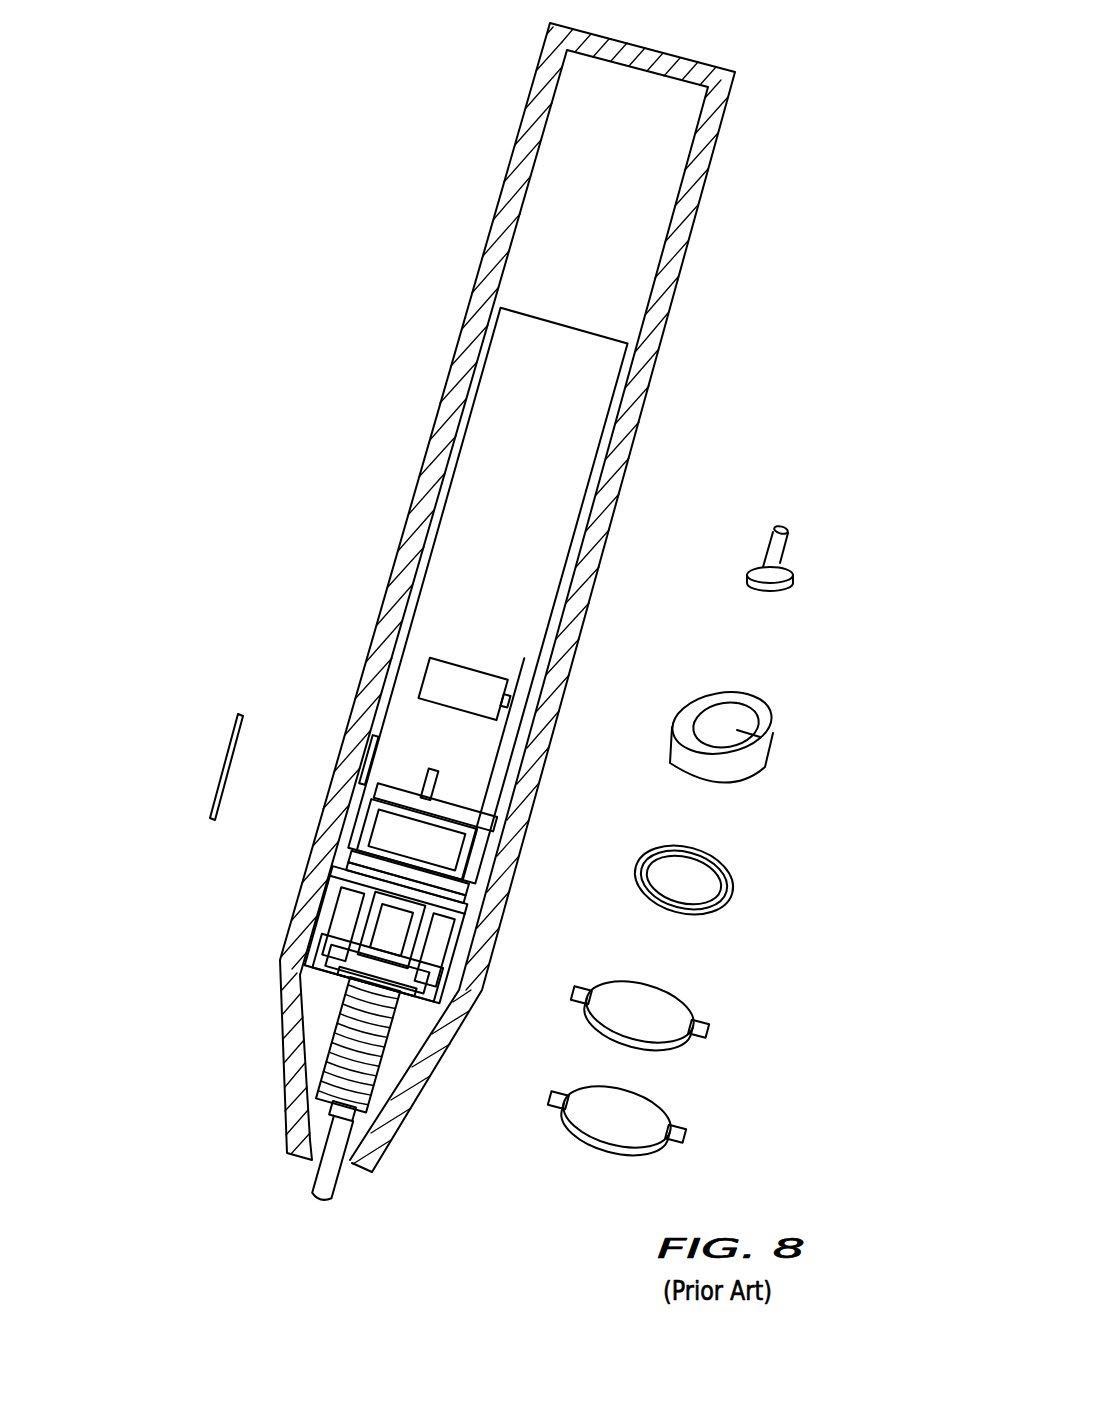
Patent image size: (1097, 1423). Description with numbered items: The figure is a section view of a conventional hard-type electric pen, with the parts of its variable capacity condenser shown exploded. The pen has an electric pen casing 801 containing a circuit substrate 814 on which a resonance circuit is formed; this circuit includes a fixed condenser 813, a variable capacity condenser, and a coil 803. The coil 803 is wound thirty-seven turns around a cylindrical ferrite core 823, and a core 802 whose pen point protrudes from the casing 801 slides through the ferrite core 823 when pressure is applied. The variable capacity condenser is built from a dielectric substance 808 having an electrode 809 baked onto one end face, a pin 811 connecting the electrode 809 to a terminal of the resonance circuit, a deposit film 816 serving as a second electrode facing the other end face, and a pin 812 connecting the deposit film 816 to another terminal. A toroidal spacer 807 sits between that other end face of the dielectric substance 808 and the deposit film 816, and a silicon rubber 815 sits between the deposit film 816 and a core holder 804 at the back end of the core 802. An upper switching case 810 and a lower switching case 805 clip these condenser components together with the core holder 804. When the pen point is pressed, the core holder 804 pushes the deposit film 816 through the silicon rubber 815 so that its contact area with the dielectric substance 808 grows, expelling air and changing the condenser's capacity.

The electric pen casing 801 is at (530, 96).
The core 802 is at (327, 1200).
The coil 803 is at (372, 1058).
The core holder 804 is at (325, 897).
The lower switching case 805 is at (305, 953).
The spacer 807 is at (463, 873).
The dielectric substance 808 is at (443, 790).
The electrode 809 is at (760, 737).
The upper switching case 810 is at (407, 785).
The pin 811 is at (462, 830).
The pin 812 is at (400, 733).
The fixed condenser 813 is at (453, 665).
The circuit substrate 814 is at (537, 355).
The silicon rubber 815 is at (668, 1083).
The deposit film 816 is at (713, 957).
The ferrite core 823 is at (333, 1108).